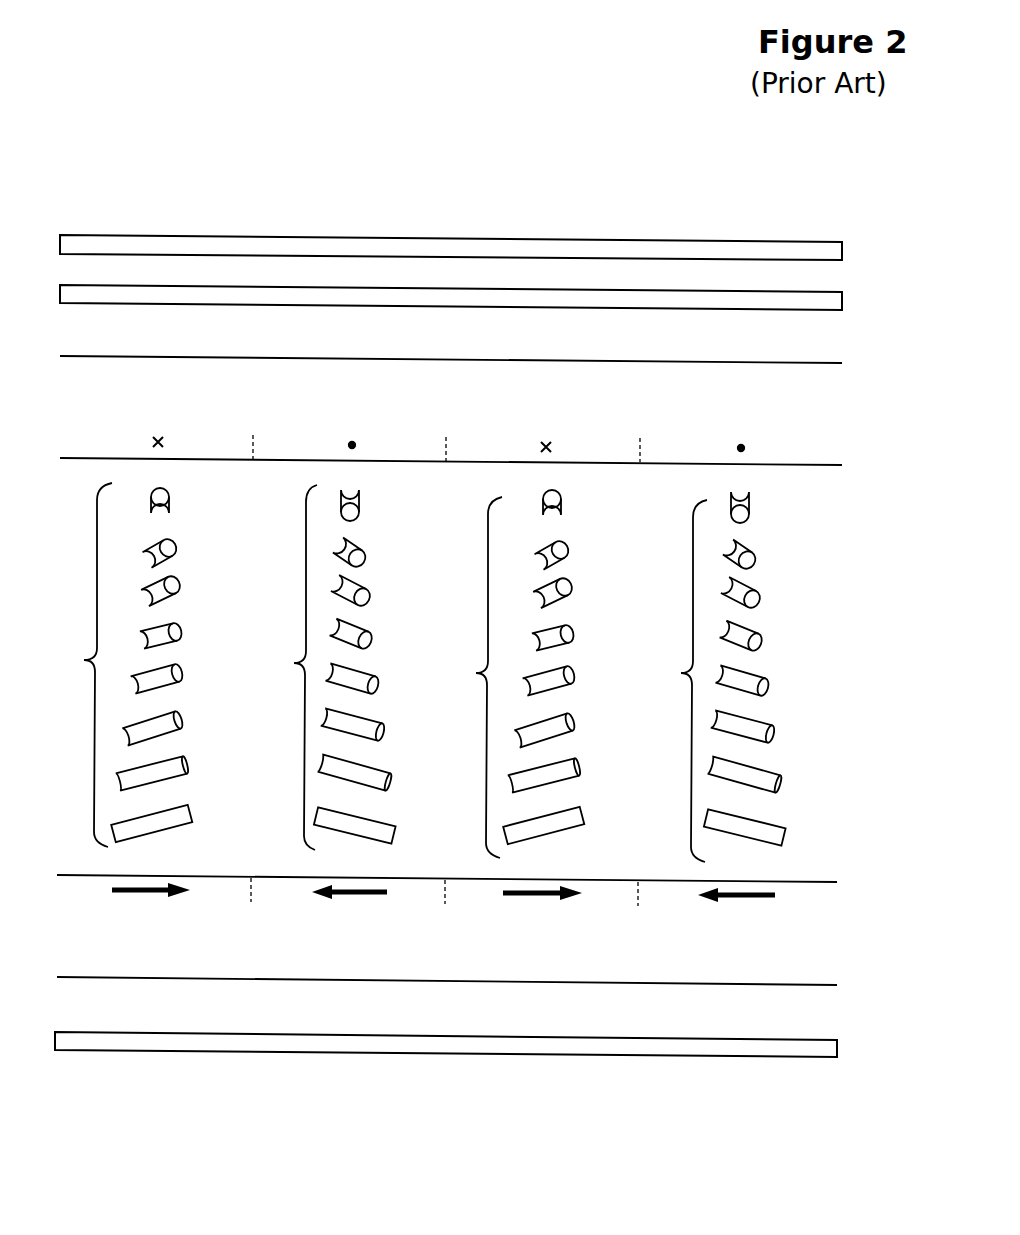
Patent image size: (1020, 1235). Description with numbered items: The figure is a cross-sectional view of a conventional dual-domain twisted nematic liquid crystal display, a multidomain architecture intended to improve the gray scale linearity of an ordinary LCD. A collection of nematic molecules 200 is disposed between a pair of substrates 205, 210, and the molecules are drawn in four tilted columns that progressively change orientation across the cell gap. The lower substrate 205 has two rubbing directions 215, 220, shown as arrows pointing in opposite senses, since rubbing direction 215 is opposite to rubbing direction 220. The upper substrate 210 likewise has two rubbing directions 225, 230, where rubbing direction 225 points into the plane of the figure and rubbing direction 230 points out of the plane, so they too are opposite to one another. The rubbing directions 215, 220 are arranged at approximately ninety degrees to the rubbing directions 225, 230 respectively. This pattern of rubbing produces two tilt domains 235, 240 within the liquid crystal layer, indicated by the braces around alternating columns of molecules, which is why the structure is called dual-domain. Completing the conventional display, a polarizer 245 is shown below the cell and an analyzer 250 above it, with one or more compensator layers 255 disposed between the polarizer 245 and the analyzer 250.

The nematic molecules 200 is at (181, 585).
The substrate 205 is at (818, 942).
The substrate 210 is at (820, 424).
The rubbing direction 215 is at (148, 893).
The rubbing direction 220 is at (353, 895).
The rubbing direction 225 is at (159, 435).
The rubbing direction 230 is at (353, 438).
The tilt domain 235 is at (86, 661).
The tilt domain 240 is at (296, 663).
The polarizer 245 is at (838, 1047).
The analyzer 250 is at (842, 250).
The compensator layer 255 is at (842, 300).